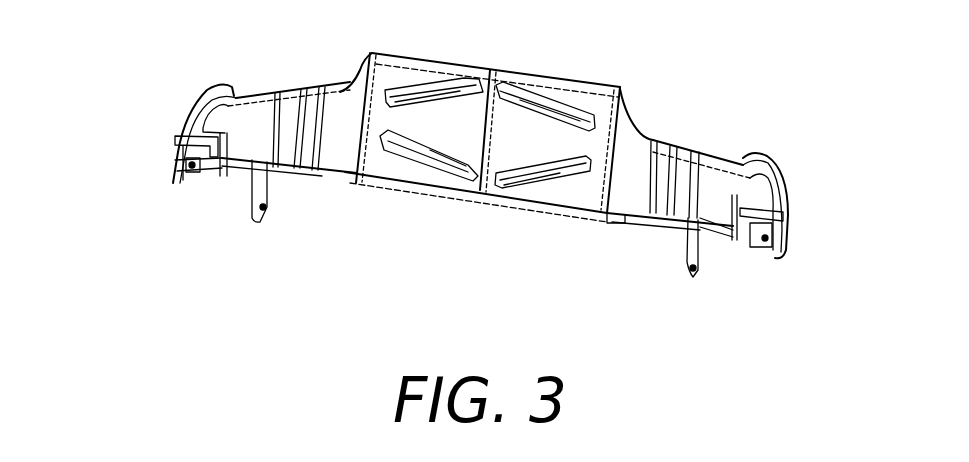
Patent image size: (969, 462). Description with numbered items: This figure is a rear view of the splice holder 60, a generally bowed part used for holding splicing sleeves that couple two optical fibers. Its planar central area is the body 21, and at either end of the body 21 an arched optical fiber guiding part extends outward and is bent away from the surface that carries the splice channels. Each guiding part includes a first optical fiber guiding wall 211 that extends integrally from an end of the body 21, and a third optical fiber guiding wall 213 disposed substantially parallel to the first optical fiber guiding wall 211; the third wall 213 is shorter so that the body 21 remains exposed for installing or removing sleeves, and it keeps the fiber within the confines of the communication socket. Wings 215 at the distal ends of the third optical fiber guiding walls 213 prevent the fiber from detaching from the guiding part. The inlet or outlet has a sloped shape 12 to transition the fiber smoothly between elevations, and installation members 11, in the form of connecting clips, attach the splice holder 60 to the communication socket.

The splice holder 60 is at (645, 51).
The body 21 is at (522, 130).
The first optical fiber guiding wall 211 is at (258, 120).
The third optical fiber guiding wall 213 is at (195, 100).
The wings 215 is at (172, 163).
The sloped shape 12 is at (195, 172).
The installation member 11 is at (266, 210).